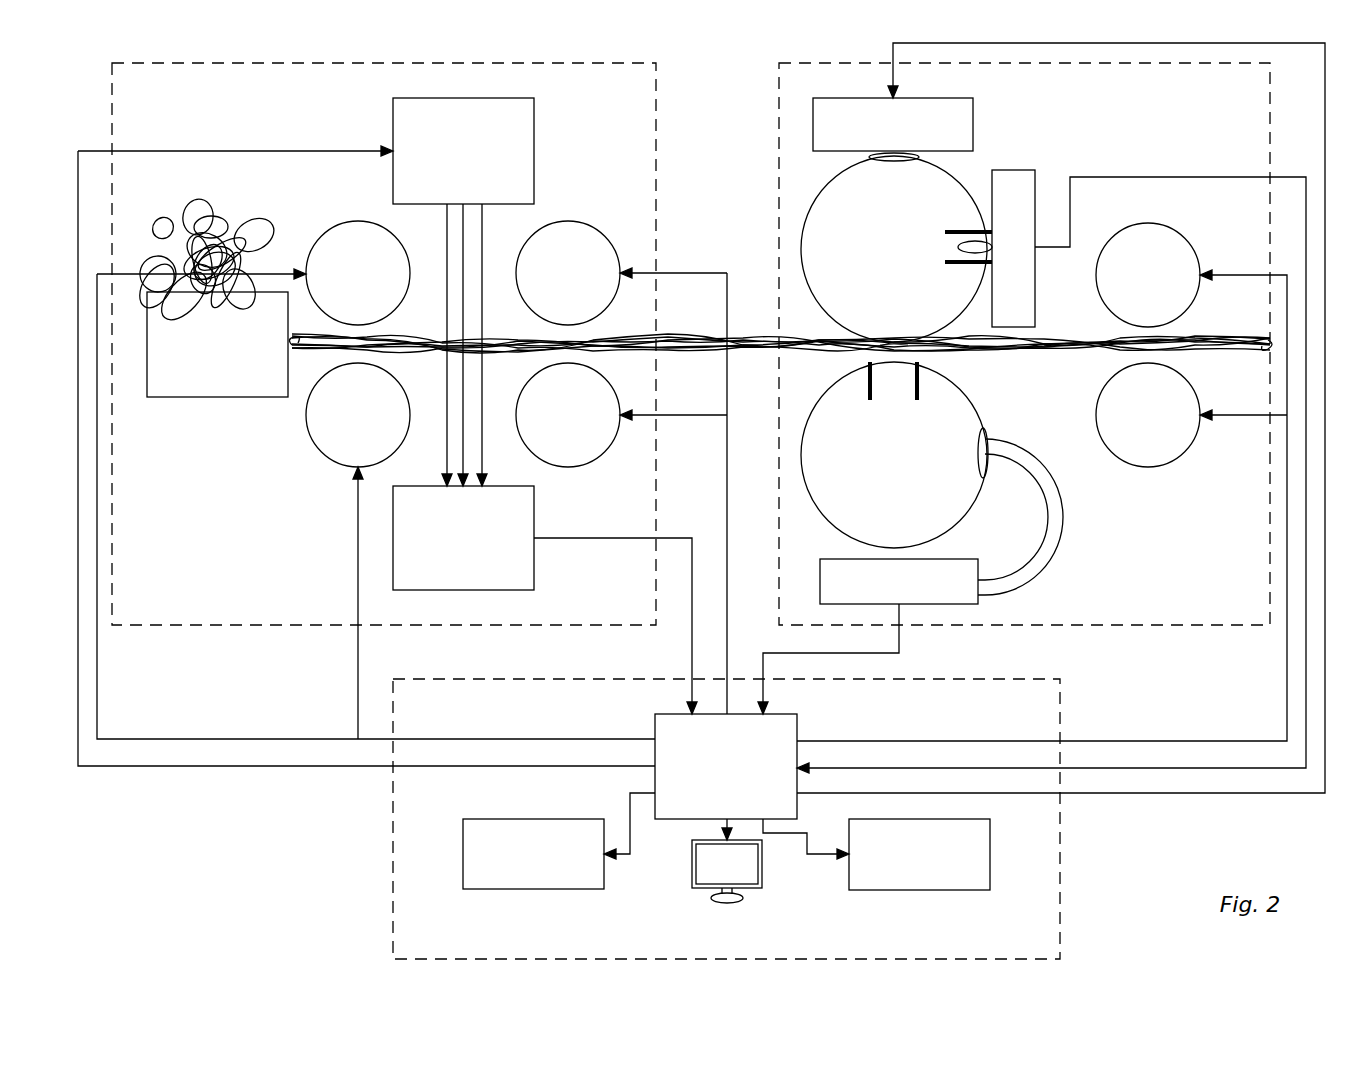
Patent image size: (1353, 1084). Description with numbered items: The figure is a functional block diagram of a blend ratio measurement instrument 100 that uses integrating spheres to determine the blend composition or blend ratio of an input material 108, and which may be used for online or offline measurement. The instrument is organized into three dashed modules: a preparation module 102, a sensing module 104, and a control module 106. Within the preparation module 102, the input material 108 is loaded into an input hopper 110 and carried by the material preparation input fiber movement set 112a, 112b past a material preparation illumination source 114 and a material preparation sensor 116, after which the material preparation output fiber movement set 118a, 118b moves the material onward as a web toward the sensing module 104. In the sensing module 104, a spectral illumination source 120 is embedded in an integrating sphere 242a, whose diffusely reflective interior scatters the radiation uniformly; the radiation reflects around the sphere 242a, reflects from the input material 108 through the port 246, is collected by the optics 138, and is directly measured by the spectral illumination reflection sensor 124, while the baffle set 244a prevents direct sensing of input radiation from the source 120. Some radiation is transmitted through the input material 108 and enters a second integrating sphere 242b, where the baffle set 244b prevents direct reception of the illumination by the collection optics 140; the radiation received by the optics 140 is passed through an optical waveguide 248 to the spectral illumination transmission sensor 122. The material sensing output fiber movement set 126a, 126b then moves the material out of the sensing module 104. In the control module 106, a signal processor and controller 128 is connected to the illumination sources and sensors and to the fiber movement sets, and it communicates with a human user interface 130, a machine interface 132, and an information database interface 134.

The blend ratio measurement instrument 100 is at (198, 875).
The preparation module 102 is at (384, 344).
The sensing module 104 is at (1024, 344).
The control module 106 is at (726, 819).
The input material 108 is at (702, 268).
The input hopper 110 is at (217, 344).
The material preparation input fiber movement set 112a is at (358, 273).
The material preparation input fiber movement set 112b is at (358, 415).
The material preparation illumination source 114 is at (463, 151).
The material preparation sensor 116 is at (463, 538).
The material preparation output fiber movement set 118a is at (568, 273).
The material preparation output fiber movement set 118b is at (568, 415).
The spectral illumination source 120 is at (1013, 248).
The spectral illumination transmission sensor 122 is at (899, 581).
The spectral illumination reflection sensor 124 is at (893, 124).
The material sensing output fiber movement set 126a is at (1148, 275).
The material sensing output fiber movement set 126b is at (1148, 415).
The signal processor and controller 128 is at (726, 766).
The human user interface 130 is at (727, 871).
The machine interface 132 is at (533, 854).
The information database interface 134 is at (919, 854).
The optics 138 is at (886, 163).
The collection optics 140 is at (977, 455).
The integrating sphere 242a is at (945, 172).
The integrating sphere 242b is at (958, 390).
The baffle set 244a is at (945, 232).
The baffle set 244b is at (870, 400).
The port 246 is at (894, 338).
The optical waveguide 248 is at (1063, 527).